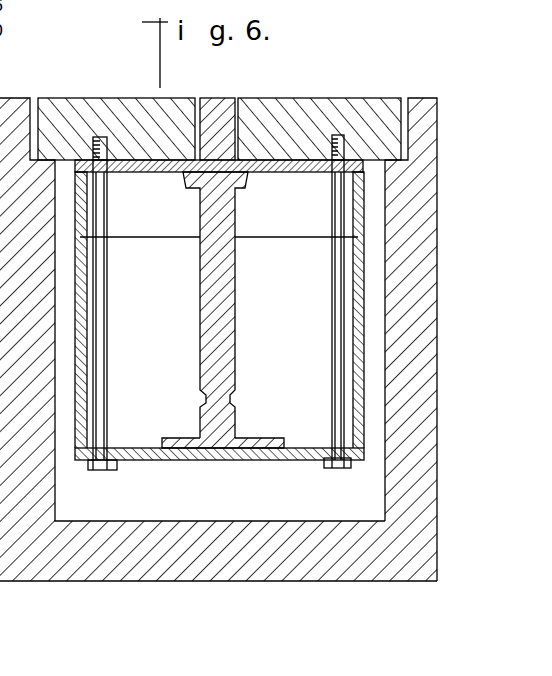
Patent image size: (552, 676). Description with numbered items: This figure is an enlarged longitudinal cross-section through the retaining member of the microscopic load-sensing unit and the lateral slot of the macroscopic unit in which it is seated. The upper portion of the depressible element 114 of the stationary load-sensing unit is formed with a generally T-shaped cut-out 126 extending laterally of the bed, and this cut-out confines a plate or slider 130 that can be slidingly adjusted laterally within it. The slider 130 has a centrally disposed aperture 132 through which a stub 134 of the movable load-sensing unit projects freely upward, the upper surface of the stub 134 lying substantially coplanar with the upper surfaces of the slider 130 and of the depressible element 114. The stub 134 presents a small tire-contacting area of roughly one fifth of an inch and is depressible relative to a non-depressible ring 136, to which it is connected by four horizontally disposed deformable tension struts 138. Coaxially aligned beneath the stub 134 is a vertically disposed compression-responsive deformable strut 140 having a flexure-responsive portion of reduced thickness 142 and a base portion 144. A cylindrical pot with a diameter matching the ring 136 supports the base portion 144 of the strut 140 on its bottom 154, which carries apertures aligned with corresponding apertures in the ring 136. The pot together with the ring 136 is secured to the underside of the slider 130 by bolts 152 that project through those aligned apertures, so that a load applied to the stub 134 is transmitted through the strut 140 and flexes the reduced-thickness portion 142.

The depressible element 114 is at (165, 568).
The T-shaped cut-out 126 is at (386, 498).
The slider 130 is at (113, 96).
The aperture 132 is at (243, 106).
The stub 134 is at (212, 97).
The non-depressible ring 136 is at (437, 186).
The deformable tension struts 138 is at (289, 163).
The compression-responsive deformable strut 140 is at (236, 274).
The flexure-responsive portion of reduced thickness 142 is at (206, 394).
The base portion 144 is at (275, 437).
The bolts 152 is at (108, 470).
The bottom 154 is at (212, 460).